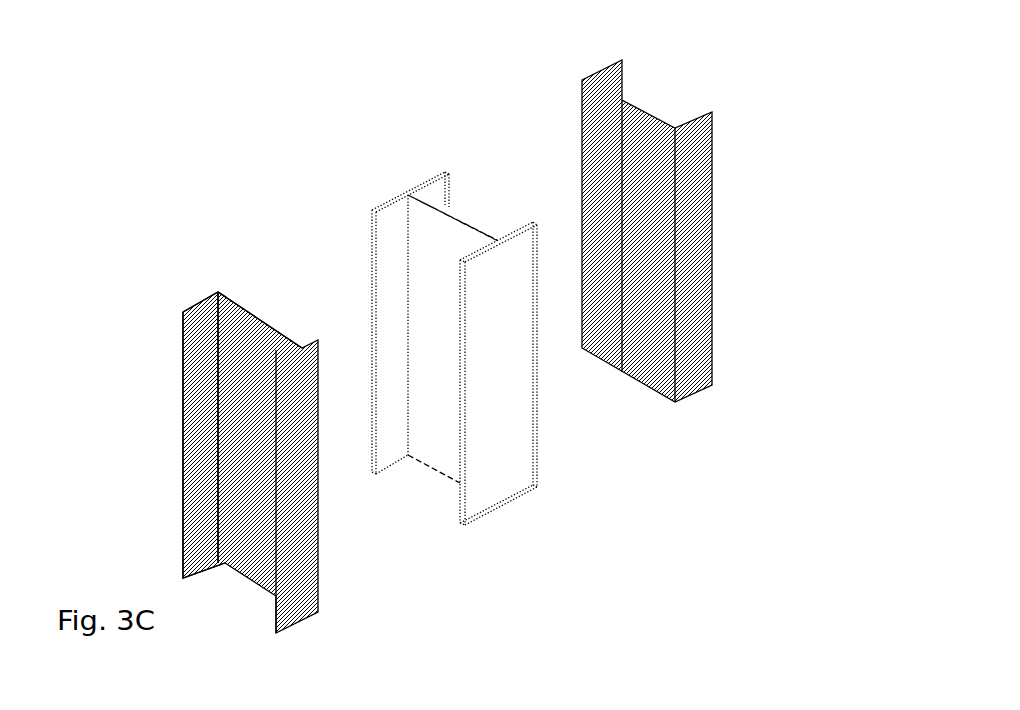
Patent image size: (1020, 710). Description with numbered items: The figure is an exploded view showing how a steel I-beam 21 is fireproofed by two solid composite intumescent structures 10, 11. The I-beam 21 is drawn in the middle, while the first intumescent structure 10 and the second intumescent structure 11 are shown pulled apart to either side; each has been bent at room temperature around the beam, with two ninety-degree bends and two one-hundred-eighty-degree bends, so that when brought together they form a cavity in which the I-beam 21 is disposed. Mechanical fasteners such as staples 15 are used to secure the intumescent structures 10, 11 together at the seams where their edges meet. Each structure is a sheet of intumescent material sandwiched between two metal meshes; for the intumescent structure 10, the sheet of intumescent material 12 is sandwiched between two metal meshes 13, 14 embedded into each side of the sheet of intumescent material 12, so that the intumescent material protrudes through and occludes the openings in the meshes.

The solid composite intumescent structure 10 is at (167, 387).
The solid composite intumescent structure 11 is at (735, 172).
The sheet of intumescent material 12 is at (200, 302).
The metal mesh 13 is at (243, 272).
The metal mesh 14 is at (190, 318).
The staples 15 is at (339, 151).
The steel I-beam 21 is at (437, 170).